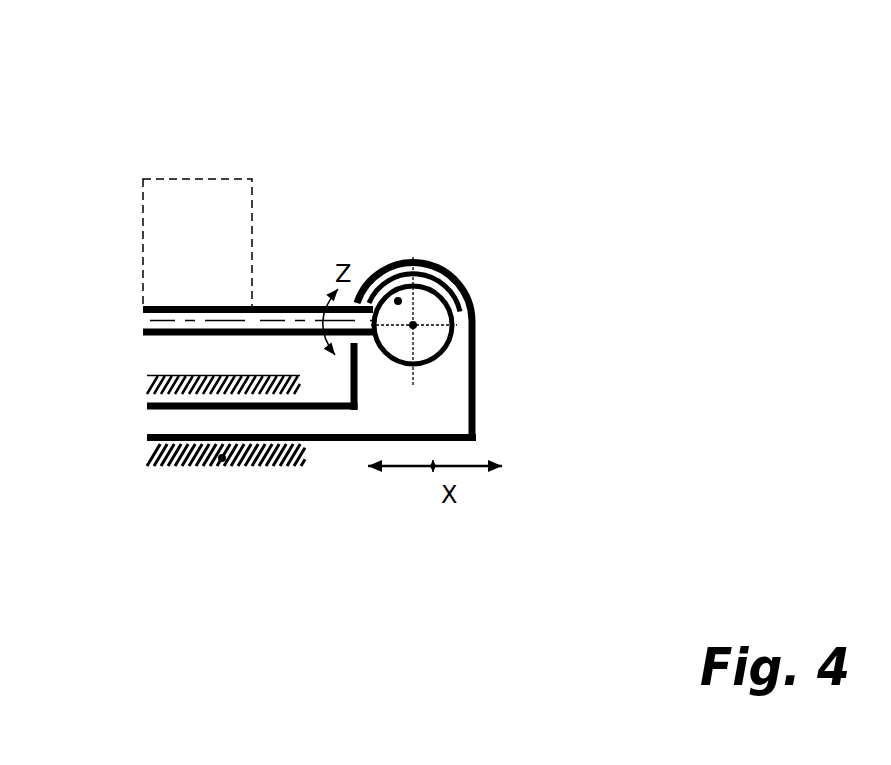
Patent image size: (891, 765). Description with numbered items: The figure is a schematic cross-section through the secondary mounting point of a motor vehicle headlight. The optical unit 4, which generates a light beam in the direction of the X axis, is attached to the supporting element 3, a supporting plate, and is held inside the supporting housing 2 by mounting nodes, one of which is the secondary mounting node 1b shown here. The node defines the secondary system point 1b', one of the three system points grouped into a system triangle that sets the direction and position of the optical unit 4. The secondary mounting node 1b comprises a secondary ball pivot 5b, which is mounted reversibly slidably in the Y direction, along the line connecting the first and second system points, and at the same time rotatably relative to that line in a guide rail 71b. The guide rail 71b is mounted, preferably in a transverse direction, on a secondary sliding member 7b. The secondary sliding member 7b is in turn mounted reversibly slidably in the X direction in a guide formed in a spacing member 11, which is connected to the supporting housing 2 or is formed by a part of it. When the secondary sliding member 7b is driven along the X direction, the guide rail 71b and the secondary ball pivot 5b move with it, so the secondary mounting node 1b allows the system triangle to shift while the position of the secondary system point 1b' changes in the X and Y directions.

The secondary mounting node 1b is at (536, 236).
The optical unit 4 is at (180, 180).
The supporting element 3 is at (293, 308).
The secondary ball pivot 5b is at (399, 301).
The guide rail 71b is at (457, 307).
The secondary system point 1b' is at (479, 384).
The secondary sliding member 7b is at (322, 445).
The supporting housing 2 is at (285, 515).
The spacing member 11 is at (220, 460).